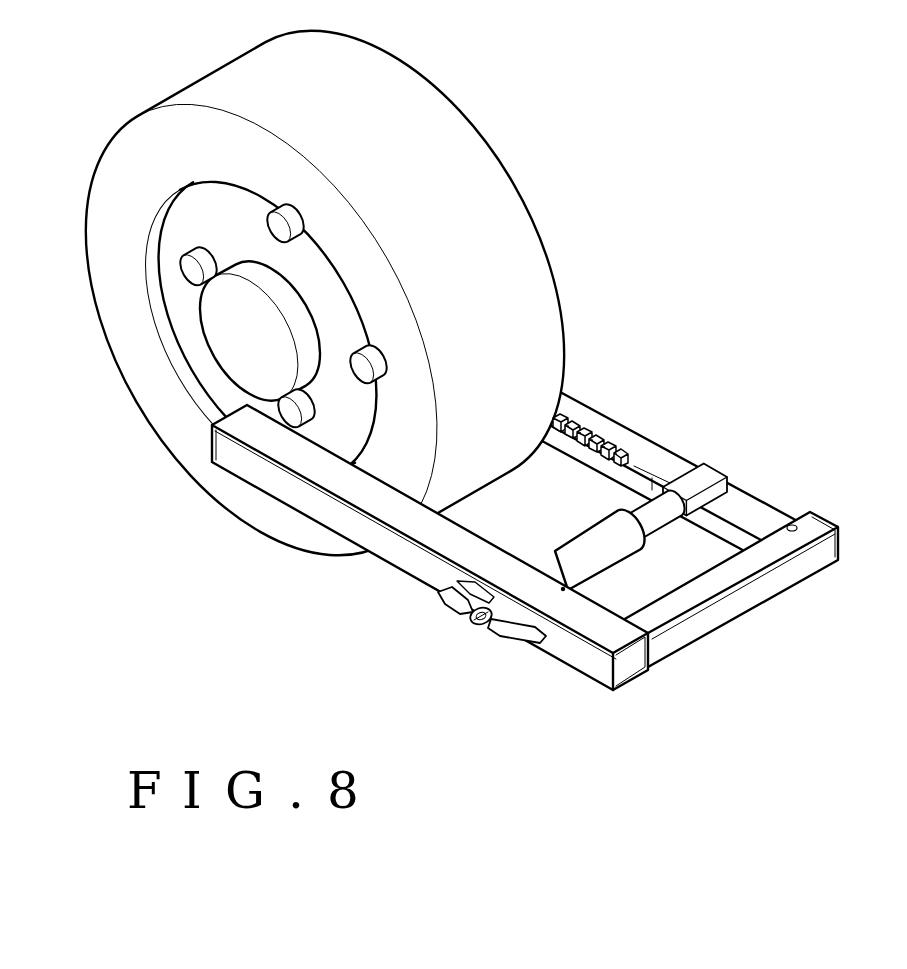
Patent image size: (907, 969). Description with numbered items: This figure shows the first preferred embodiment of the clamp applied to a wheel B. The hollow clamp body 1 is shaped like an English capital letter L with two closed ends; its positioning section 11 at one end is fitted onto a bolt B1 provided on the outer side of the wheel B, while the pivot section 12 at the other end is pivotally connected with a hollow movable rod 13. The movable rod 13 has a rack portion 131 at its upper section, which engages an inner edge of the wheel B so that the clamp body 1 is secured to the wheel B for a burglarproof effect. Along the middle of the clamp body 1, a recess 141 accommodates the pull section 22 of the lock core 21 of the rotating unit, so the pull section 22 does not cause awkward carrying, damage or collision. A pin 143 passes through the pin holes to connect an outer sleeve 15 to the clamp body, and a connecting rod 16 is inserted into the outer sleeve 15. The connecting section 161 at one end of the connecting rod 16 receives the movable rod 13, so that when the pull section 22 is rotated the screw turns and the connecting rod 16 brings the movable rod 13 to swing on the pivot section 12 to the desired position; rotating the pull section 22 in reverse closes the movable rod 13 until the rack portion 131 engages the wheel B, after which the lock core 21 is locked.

The wheel B is at (497, 202).
The bolt B1 is at (190, 268).
The clamp body 1 is at (357, 520).
The positioning section 11 is at (287, 414).
The pivot section 12 is at (812, 533).
The movable rod 13 is at (739, 498).
The rack portion 131 is at (592, 442).
The recess 141 is at (522, 638).
The pin 143 is at (563, 592).
The outer sleeve 15 is at (618, 547).
The connecting rod 16 is at (660, 517).
The connecting section 161 is at (703, 468).
The lock core 21 is at (479, 626).
The pull section 22 is at (460, 606).